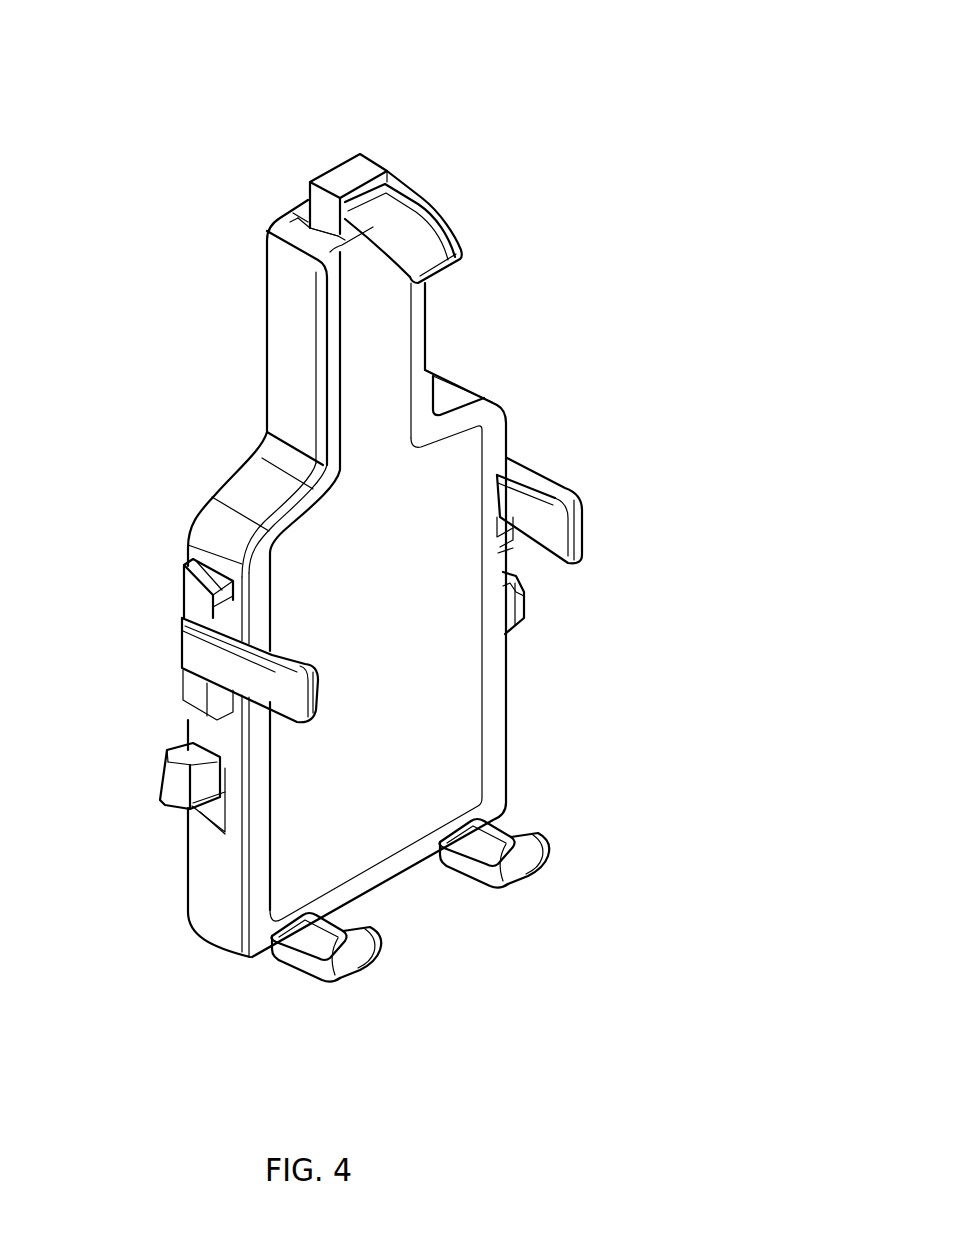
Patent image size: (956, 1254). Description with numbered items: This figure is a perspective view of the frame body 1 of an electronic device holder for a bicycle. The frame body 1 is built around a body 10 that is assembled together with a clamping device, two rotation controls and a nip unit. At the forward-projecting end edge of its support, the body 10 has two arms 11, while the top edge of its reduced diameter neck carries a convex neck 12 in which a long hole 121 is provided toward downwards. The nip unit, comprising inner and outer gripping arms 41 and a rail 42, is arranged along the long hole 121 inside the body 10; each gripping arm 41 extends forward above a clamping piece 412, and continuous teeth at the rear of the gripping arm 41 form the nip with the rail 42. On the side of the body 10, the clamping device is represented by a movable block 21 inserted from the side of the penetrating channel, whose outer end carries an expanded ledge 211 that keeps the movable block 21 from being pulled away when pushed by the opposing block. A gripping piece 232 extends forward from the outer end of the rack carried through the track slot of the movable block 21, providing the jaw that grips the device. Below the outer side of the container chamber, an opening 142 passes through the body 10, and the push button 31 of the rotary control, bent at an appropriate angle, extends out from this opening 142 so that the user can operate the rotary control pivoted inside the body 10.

The frame body 1 is at (568, 122).
The body 10 is at (508, 710).
The arms 11 is at (290, 960).
The convex neck 12 is at (397, 350).
The long hole 121 is at (303, 220).
The opening 142 is at (197, 822).
The movable block 21 is at (228, 608).
The expanded ledge 211 is at (193, 573).
The gripping piece 232 is at (187, 650).
The push button 31 is at (167, 782).
The gripping arm 41 is at (340, 165).
The clamping piece 412 is at (440, 233).
The rail 42 is at (327, 234).